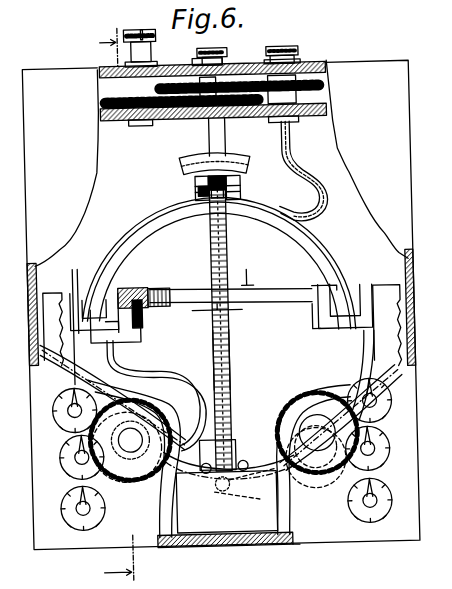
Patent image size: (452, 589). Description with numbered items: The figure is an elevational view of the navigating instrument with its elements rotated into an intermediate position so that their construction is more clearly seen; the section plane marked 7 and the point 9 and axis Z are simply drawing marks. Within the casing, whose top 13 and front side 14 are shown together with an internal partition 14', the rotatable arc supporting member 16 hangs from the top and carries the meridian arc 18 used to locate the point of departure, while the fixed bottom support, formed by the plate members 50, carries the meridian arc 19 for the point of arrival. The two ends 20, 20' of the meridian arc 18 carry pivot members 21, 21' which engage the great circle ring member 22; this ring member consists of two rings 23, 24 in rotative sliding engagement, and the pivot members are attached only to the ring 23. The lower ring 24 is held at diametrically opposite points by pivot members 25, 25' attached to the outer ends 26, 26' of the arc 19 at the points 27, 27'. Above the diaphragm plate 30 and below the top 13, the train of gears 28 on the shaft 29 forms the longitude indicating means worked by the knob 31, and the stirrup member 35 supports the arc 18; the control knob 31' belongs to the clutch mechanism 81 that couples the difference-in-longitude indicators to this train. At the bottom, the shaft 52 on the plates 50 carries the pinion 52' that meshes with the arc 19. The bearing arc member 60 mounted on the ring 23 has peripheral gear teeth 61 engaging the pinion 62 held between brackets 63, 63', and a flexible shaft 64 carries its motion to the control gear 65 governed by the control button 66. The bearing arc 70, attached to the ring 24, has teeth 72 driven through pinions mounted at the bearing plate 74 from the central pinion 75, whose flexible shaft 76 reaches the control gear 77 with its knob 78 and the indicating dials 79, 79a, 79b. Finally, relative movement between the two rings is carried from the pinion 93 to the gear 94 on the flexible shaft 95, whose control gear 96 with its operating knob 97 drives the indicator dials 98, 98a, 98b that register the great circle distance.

The section line 7 is at (104, 306).
The adjusting knob 9 is at (214, 42).
The top 13 is at (314, 71).
The front side 14 is at (287, 554).
The partition 14' is at (222, 407).
The arc supporting member 16 is at (236, 142).
The meridian arc 18 is at (339, 241).
The meridian arc 19 is at (365, 348).
The end of meridian arc 20 is at (345, 305).
The end of meridian arc 20' is at (94, 311).
The pivot member 21 is at (324, 271).
The pivot member 21' is at (132, 291).
The great circle ring member 22 is at (251, 267).
The ring member 23 is at (188, 288).
The ring member 24 is at (191, 310).
The pivot member 25 is at (289, 329).
The pivot member 25' is at (125, 327).
The outer end of meridian arc 26 is at (214, 315).
The outer end of meridian arc 26' is at (52, 317).
The attachment point 27 is at (388, 307).
The attachment point 27' is at (70, 316).
The train of gears 28 is at (176, 118).
The shaft 29 is at (142, 86).
The diaphragm plate 30 is at (184, 118).
The knob 31 is at (200, 59).
The control knob 31' is at (140, 39).
The stirrup member 35 is at (184, 161).
The plate members 50 is at (214, 540).
The shaft 52 is at (222, 493).
The pinion 52' is at (246, 485).
The bearing arc member 60 is at (212, 241).
The gear teeth 61 is at (228, 247).
The pinion 62 is at (199, 183).
The bracket 63 is at (245, 188).
The bracket 63' is at (190, 203).
The flexible shaft 64 is at (308, 170).
The control gear 65 is at (305, 90).
The control button 66 is at (306, 49).
The bearing arc 70 is at (228, 338).
The peripheral gear teeth 72 is at (228, 362).
The bearing plate 74 is at (234, 440).
The central pinion 75 is at (204, 462).
The flexible shaft 76 is at (258, 461).
The control gear 77 is at (290, 405).
The knob 78 is at (284, 470).
The indicating dial 79 is at (383, 520).
The indicating dial 79a is at (383, 472).
The indicating dial 79b is at (387, 426).
The clutch mechanism 81 is at (156, 58).
The pinion 93 is at (118, 286).
The gear 94 is at (96, 337).
The flexible shaft 95 is at (194, 370).
The control gear 96 is at (160, 412).
The operating knob 97 is at (126, 398).
The indicator dial 98 is at (59, 517).
The indicator dial 98a is at (60, 473).
The indicator dial 98b is at (52, 417).
The axis Z is at (154, 311).